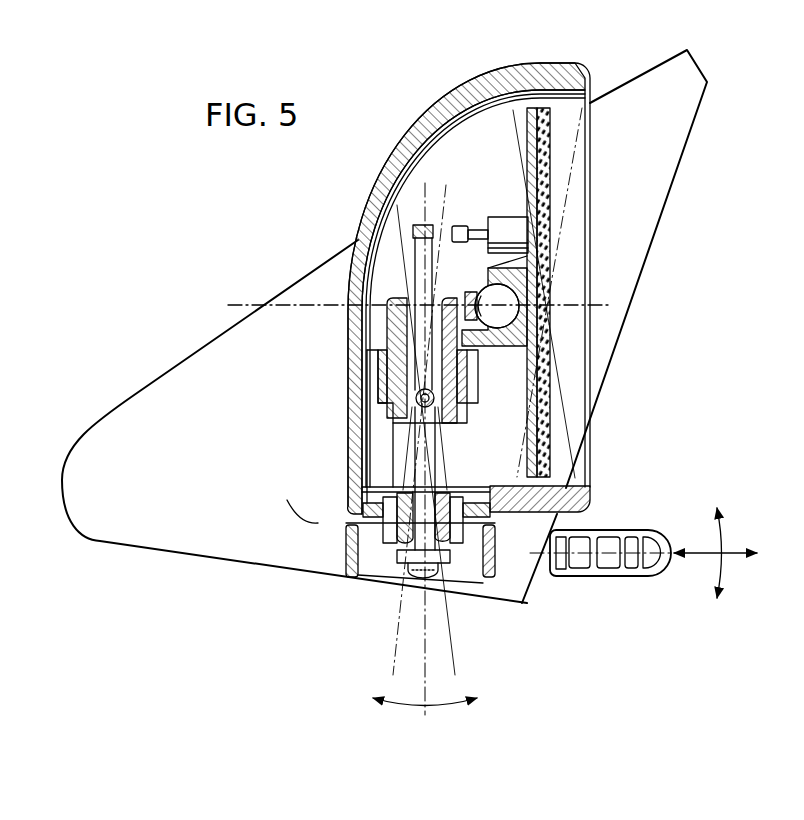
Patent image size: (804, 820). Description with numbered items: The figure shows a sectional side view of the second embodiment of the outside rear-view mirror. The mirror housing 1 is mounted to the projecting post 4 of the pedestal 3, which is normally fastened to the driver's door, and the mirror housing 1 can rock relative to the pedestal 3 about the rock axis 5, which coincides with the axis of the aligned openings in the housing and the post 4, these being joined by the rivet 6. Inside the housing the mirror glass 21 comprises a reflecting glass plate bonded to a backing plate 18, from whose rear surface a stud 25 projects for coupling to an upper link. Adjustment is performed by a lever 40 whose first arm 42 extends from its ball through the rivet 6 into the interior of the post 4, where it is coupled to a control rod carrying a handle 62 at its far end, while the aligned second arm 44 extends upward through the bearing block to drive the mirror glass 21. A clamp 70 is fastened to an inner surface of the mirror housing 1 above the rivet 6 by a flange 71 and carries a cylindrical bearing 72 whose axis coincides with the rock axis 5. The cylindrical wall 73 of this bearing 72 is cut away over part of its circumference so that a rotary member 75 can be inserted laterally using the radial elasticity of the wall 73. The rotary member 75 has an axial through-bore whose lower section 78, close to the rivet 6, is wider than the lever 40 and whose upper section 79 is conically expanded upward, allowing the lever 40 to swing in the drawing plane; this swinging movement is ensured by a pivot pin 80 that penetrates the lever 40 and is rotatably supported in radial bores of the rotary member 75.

The mirror housing 1 is at (541, 60).
The pedestal 3 is at (644, 69).
The post 4 is at (490, 574).
The rock axis 5 is at (416, 660).
The rivet 6 is at (408, 542).
The backing plate 18 is at (530, 128).
The mirror glass 21 is at (545, 156).
The stud 25 is at (502, 222).
The lever 40 is at (436, 466).
The first arm 42 is at (457, 414).
The second arm 44 is at (420, 265).
The handle 62 is at (605, 577).
The clamp 70 is at (373, 459).
The flange 71 is at (414, 400).
The cylindrical bearing 72 is at (371, 384).
The cylindrical wall 73 is at (466, 377).
The rotary member 75 is at (376, 327).
The lower section 78 is at (385, 346).
The upper section 79 is at (310, 303).
The pivot pin 80 is at (347, 488).